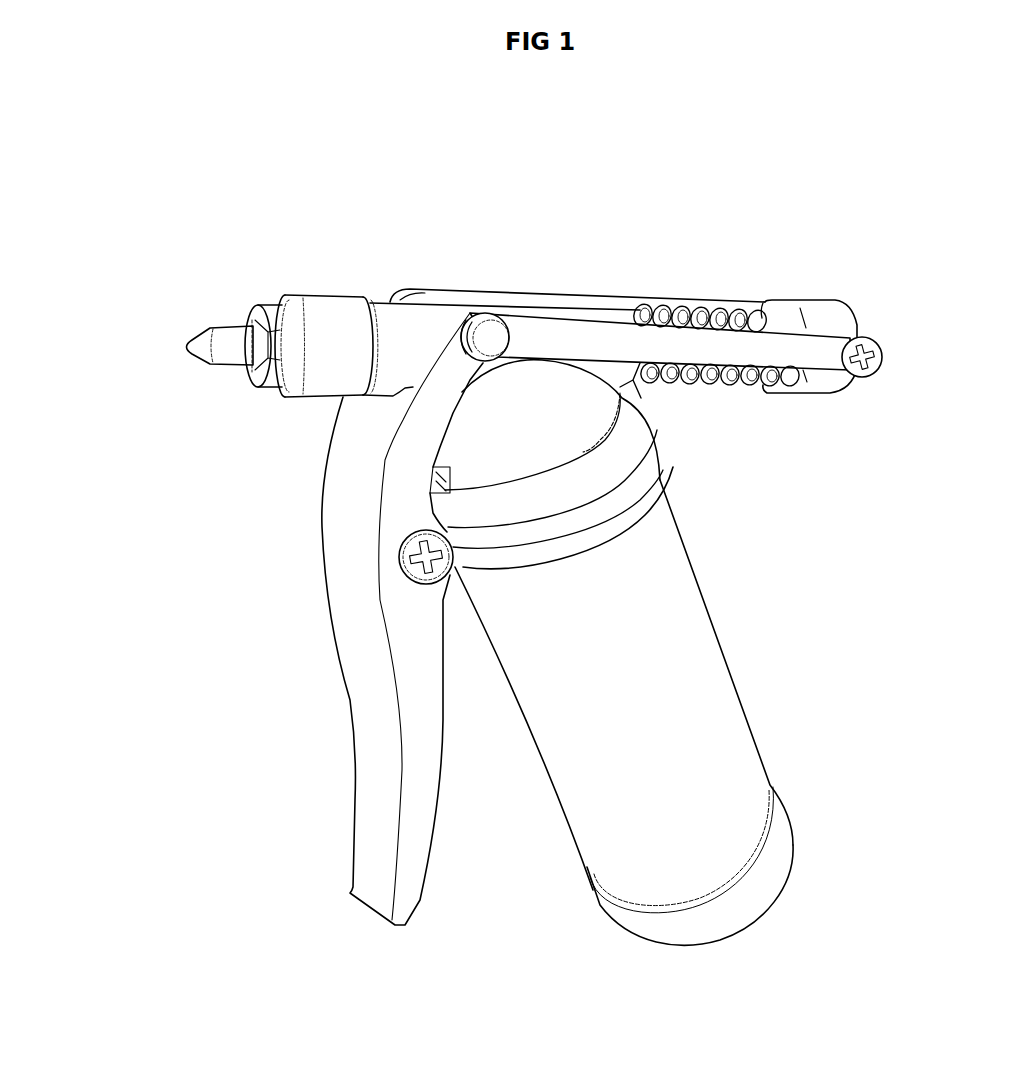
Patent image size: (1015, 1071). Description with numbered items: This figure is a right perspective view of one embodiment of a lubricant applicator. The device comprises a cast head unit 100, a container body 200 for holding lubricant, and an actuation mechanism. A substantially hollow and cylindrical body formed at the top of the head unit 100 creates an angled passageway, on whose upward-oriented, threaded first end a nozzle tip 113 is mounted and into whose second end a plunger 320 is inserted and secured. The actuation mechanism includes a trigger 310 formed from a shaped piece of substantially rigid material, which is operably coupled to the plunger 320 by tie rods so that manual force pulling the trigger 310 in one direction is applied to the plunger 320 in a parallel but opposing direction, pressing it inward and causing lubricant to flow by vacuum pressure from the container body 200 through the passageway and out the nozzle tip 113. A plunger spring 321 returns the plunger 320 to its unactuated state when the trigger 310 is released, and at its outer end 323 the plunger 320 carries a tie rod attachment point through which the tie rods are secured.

The head unit 100 is at (670, 458).
The nozzle tip 113 is at (198, 363).
The container body 200 is at (753, 738).
The trigger 310 is at (353, 744).
The plunger 320 is at (765, 303).
The plunger spring 321 is at (710, 382).
The outer end 323 is at (850, 307).